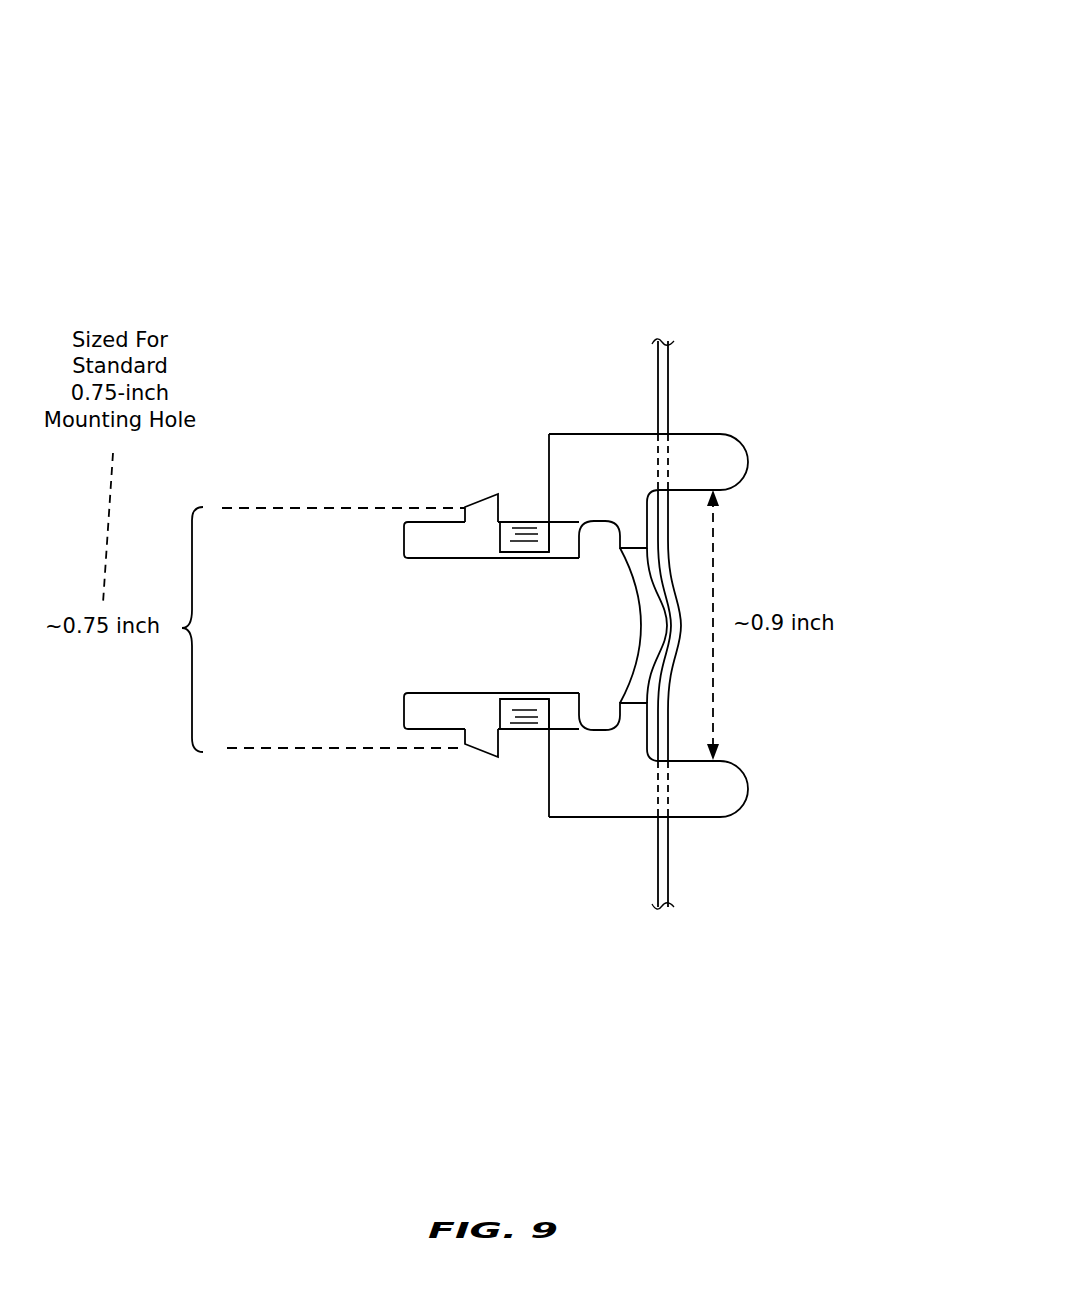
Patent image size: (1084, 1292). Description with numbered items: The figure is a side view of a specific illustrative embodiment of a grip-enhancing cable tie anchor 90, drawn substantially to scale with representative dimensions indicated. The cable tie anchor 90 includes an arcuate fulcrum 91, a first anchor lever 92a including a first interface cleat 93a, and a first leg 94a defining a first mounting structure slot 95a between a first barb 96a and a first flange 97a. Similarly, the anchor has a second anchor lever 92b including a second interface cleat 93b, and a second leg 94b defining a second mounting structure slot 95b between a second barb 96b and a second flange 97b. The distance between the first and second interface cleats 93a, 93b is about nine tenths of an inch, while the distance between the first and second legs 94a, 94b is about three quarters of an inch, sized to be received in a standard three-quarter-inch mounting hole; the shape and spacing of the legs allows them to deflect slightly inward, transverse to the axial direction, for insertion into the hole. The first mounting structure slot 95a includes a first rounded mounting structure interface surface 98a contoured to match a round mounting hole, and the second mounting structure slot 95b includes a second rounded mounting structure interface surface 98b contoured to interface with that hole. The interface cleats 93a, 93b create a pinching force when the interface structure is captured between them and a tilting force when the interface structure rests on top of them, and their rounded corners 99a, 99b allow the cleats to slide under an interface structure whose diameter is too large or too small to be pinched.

The grip-enhancing cable tie anchor 90 is at (308, 142).
The arcuate fulcrum 91 is at (633, 623).
The first anchor lever 92a is at (740, 318).
The second anchor lever 92b is at (740, 893).
The first interface cleat 93a is at (762, 447).
The second interface cleat 93b is at (757, 805).
The first leg 94a is at (395, 548).
The second leg 94b is at (390, 688).
The first mounting structure slot 95a is at (516, 495).
The second mounting structure slot 95b is at (509, 780).
The first barb 96a is at (465, 490).
The second barb 96b is at (472, 765).
The first flange 97a is at (550, 487).
The second flange 97b is at (552, 760).
The first rounded mounting structure interface surface 98a is at (530, 517).
The second rounded mounting structure interface surface 98b is at (526, 735).
The first rounded corner 99a is at (745, 474).
The second rounded corner 99b is at (746, 785).